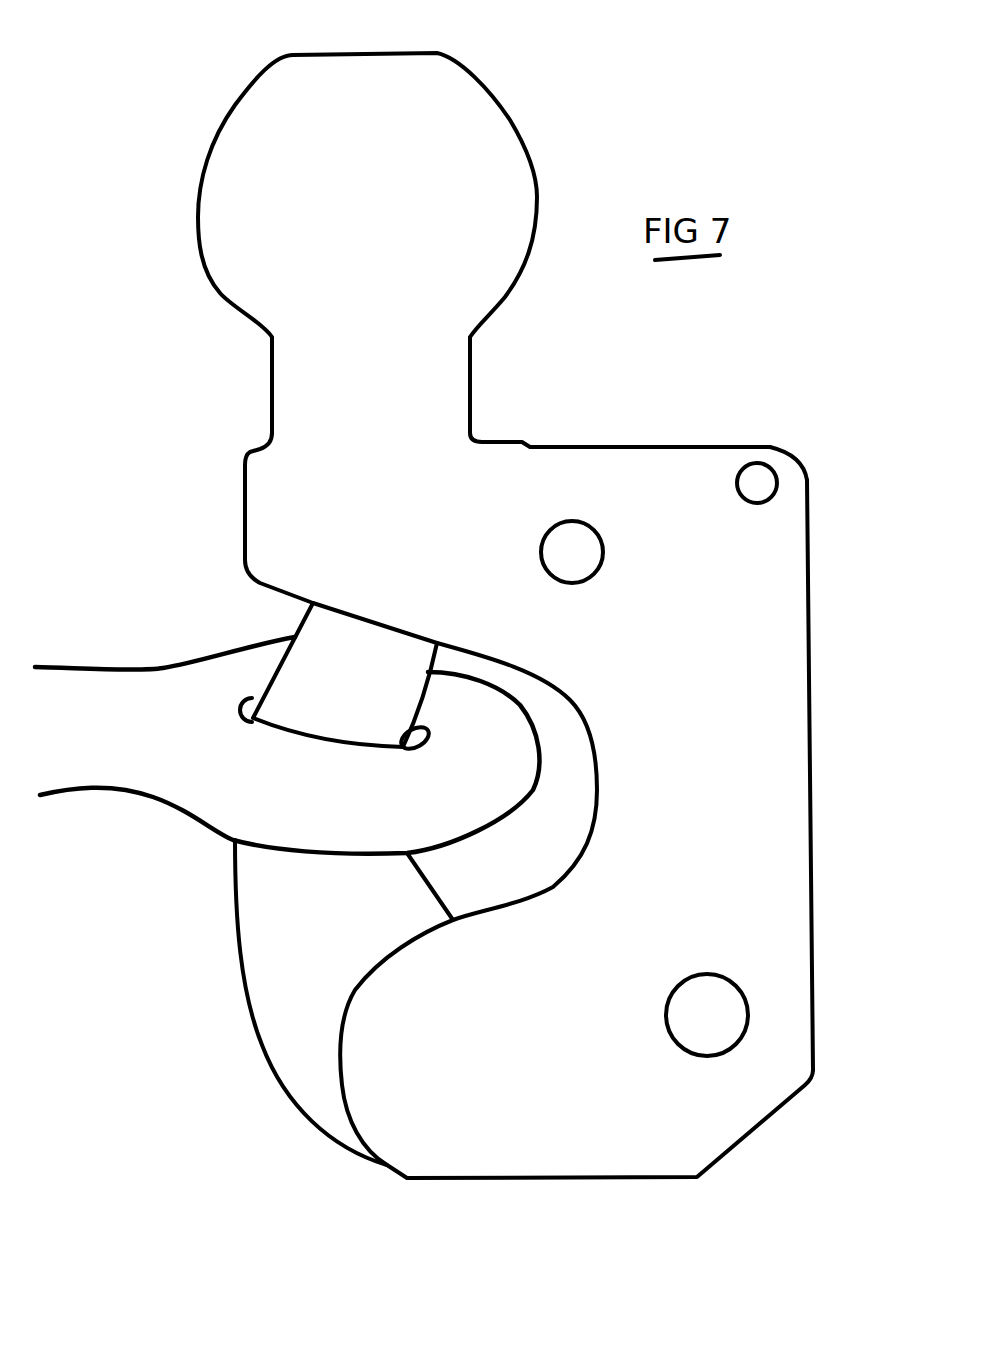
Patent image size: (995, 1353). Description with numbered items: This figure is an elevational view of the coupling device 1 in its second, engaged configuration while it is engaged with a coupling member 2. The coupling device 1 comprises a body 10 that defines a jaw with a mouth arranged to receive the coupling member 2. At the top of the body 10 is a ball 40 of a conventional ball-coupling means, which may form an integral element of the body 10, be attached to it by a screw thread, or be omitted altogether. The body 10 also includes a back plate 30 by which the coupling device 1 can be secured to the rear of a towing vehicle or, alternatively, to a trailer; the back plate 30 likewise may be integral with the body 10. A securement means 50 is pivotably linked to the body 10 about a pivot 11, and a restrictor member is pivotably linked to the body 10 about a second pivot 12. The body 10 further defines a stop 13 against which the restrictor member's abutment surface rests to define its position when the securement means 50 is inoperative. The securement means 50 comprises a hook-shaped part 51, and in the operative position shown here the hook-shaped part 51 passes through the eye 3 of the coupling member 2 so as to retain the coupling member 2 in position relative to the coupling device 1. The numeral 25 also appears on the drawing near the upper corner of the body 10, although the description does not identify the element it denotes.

The coupling device 1 is at (542, 320).
The coupling member 2 is at (160, 683).
The eye 3 is at (248, 700).
The body 10 is at (683, 500).
The pivot 11 is at (718, 1027).
The pivot 12 is at (575, 547).
The stop 13 is at (753, 488).
The corner 25 is at (812, 418).
The back plate 30 is at (810, 697).
The ball 40 is at (458, 118).
The securement means 50 is at (318, 1098).
The hook-shaped part 51 is at (320, 700).